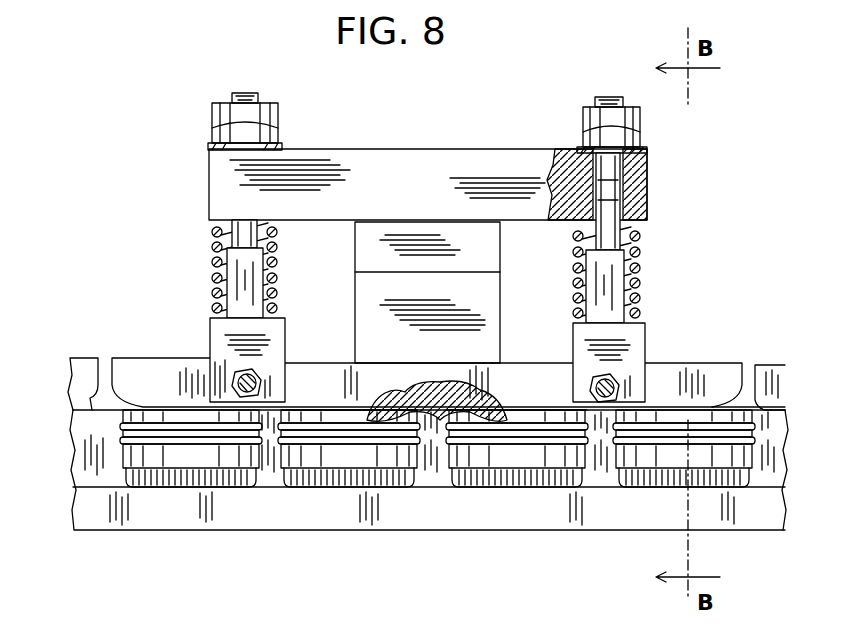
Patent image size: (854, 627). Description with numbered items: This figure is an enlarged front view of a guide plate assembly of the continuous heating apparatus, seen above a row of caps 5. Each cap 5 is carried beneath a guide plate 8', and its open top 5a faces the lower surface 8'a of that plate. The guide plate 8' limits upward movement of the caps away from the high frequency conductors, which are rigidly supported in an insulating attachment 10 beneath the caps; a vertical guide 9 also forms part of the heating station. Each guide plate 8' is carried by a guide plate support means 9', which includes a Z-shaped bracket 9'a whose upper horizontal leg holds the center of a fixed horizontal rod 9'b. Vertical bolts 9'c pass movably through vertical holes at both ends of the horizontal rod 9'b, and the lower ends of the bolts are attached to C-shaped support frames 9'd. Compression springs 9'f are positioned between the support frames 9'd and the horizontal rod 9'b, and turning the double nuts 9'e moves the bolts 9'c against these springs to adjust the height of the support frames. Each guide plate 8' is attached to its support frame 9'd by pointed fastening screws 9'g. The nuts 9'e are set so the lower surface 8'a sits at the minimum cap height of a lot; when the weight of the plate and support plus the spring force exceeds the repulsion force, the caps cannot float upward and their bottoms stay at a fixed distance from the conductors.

The cap 5 is at (128, 468).
The open top of the cap 5a is at (358, 410).
The guide plate 8' is at (426, 362).
The lower surface of the guide plate 8'a is at (437, 374).
The vertical guide 9 is at (797, 470).
The guide plate support means 9' is at (404, 247).
The Z-shaped bracket 9'a is at (451, 292).
The fixed horizontal rod 9'b is at (428, 162).
The vertical bolt 9'c is at (456, 238).
The C-shaped support frame 9'd is at (450, 350).
The double nut 9'e is at (427, 123).
The compression spring 9'f is at (400, 270).
The pointed fastening screw 9'g is at (389, 356).
The attachment 10 is at (326, 522).